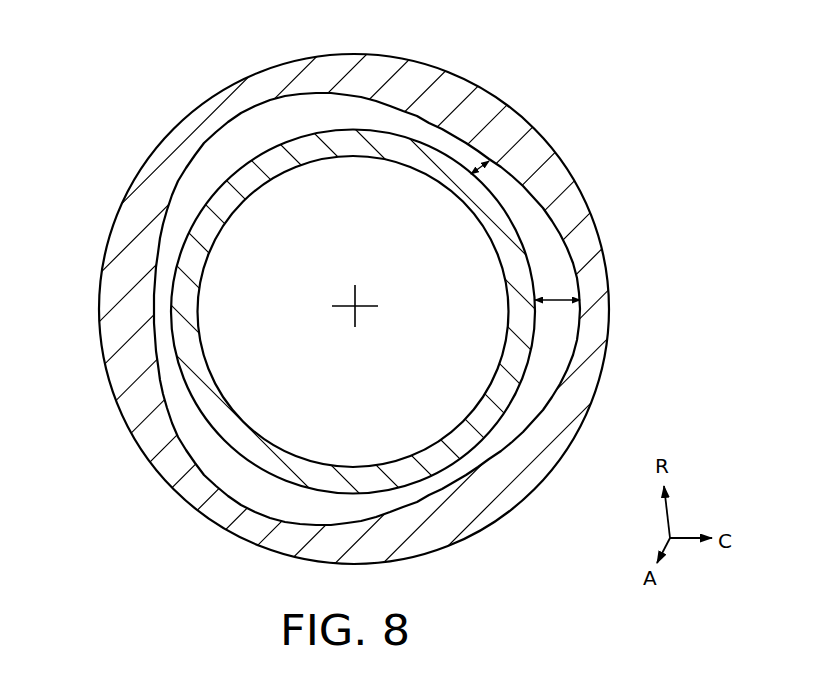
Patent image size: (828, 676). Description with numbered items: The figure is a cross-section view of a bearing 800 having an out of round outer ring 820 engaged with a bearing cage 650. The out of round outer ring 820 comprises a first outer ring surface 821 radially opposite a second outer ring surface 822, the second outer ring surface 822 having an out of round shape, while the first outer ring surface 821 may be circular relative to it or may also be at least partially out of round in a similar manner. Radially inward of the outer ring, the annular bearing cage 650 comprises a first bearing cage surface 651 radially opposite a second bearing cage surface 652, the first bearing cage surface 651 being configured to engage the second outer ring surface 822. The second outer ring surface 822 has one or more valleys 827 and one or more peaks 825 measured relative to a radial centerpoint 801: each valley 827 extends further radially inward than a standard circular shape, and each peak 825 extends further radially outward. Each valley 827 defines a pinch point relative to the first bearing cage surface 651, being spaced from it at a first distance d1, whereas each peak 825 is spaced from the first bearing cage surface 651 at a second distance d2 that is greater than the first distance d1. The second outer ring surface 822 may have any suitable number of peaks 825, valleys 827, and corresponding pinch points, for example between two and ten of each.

The bearing 800 is at (641, 164).
The out of round outer ring 820 is at (143, 249).
The first outer ring surface 821 is at (125, 189).
The second outer ring surface 822 is at (178, 182).
The peak 825 is at (234, 104).
The valley 827 is at (138, 312).
The bearing cage 650 is at (508, 374).
The first bearing cage surface 651 is at (423, 482).
The second bearing cage surface 652 is at (460, 428).
The radial centerpoint 801 is at (352, 305).
The first distance d1 is at (488, 165).
The second distance d2 is at (580, 300).